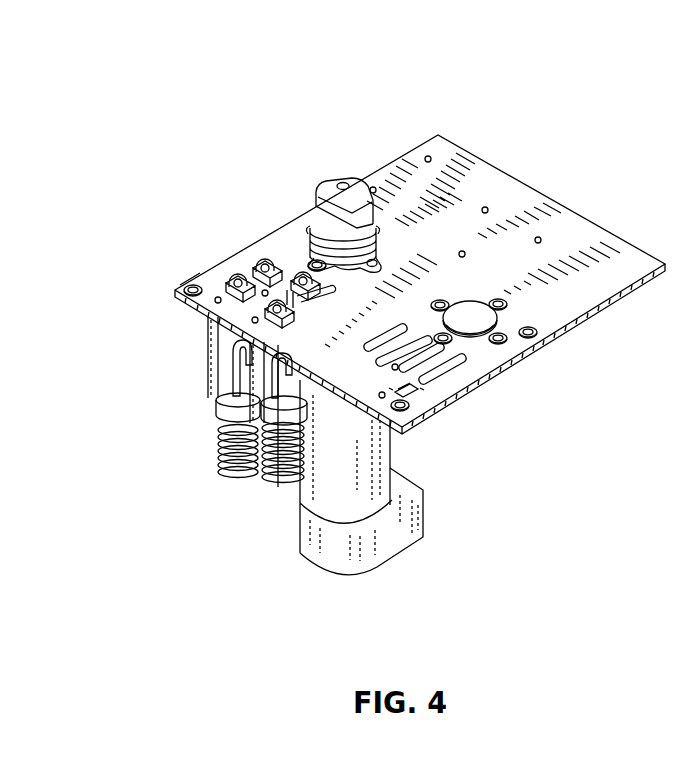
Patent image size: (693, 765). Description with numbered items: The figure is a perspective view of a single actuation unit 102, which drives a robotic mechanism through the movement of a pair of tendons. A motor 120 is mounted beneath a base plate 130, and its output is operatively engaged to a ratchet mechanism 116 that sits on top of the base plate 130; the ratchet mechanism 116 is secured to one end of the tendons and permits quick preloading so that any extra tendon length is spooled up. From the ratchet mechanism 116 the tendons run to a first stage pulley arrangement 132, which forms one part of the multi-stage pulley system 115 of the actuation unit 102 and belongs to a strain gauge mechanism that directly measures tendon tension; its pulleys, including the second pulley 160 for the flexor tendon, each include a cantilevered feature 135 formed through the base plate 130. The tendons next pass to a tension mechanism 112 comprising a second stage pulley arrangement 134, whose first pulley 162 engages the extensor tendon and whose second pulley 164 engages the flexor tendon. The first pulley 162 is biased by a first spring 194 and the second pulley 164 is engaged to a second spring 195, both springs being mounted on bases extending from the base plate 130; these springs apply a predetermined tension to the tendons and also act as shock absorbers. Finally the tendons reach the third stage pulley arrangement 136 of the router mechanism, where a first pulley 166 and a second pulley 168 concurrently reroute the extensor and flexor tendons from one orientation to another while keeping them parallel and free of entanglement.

The actuation unit 102 is at (185, 82).
The tension mechanism 112 is at (200, 432).
The multi-stage pulley system 115 is at (163, 290).
The ratchet mechanism 116 is at (345, 186).
The motor 120 is at (335, 492).
The base plate 130 is at (525, 215).
The first stage pulley arrangement 132 is at (262, 233).
The second stage pulley arrangement 134 is at (217, 377).
The cantilevered feature 135 is at (267, 247).
The third stage pulley arrangement 136 is at (203, 268).
The second pulley 160 is at (248, 258).
The first pulley 162 is at (226, 432).
The second pulley 164 is at (278, 487).
The first pulley 166 is at (343, 405).
The second pulley 168 is at (212, 303).
The first spring 194 is at (237, 472).
The second spring 195 is at (273, 483).